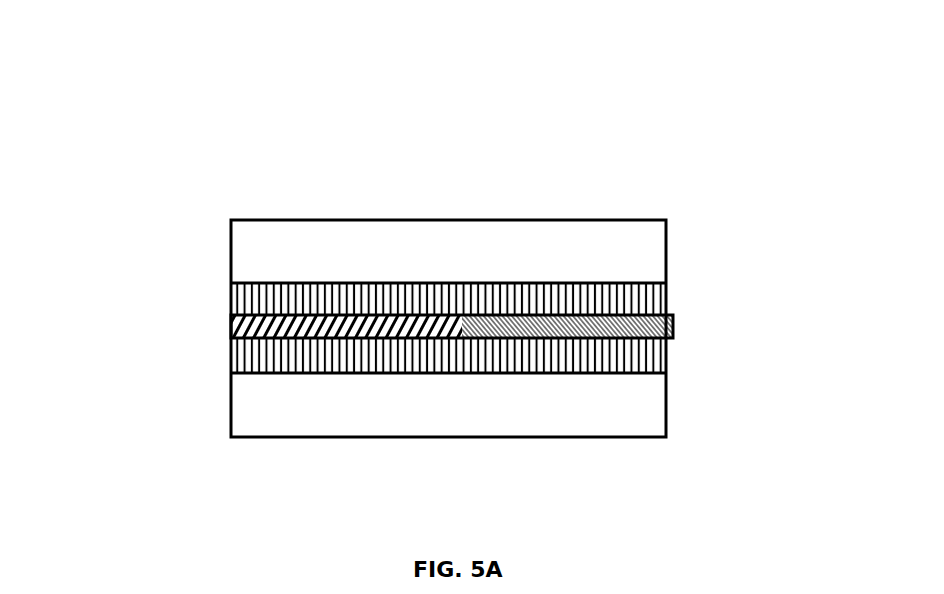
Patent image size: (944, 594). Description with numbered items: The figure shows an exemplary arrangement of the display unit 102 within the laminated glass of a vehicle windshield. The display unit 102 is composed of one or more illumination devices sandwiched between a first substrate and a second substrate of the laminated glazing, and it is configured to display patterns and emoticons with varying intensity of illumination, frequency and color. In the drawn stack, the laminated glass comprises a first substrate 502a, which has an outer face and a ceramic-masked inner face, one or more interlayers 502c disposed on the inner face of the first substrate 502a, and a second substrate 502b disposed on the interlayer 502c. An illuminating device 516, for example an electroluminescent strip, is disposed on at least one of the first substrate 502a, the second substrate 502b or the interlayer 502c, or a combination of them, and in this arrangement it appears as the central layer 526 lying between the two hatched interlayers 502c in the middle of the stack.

The display unit 102 is at (461, 187).
The first substrate 502a is at (668, 239).
The second substrate 502b is at (668, 412).
The interlayer 502c is at (229, 289).
The illuminating device 516 is at (229, 333).
The central layer 526 is at (672, 324).